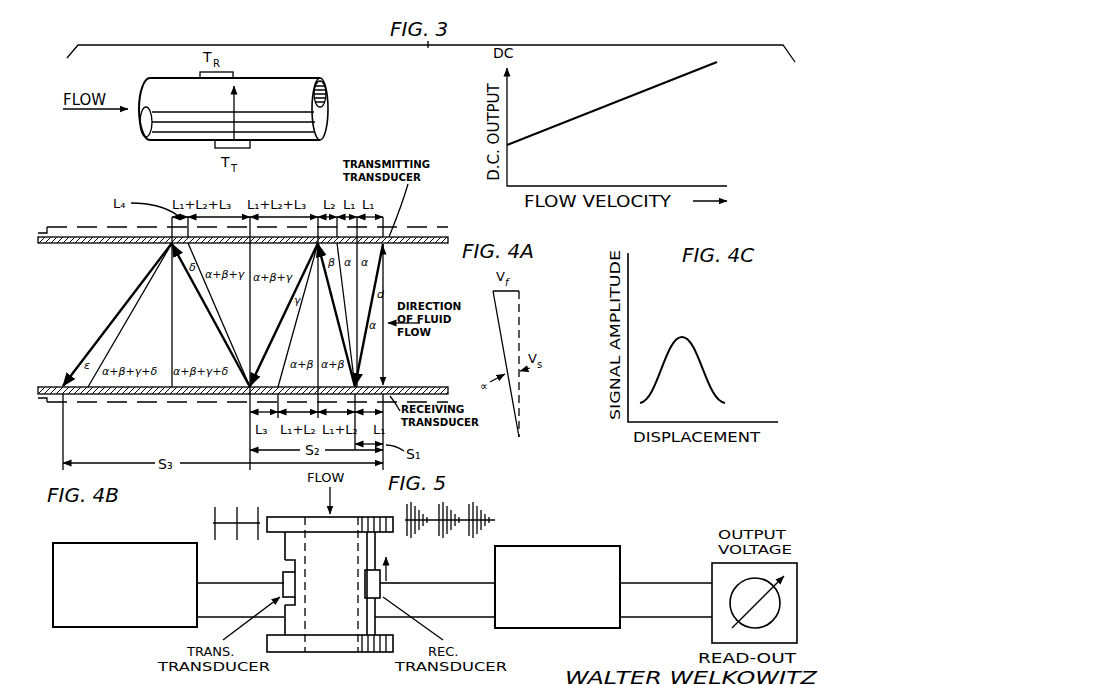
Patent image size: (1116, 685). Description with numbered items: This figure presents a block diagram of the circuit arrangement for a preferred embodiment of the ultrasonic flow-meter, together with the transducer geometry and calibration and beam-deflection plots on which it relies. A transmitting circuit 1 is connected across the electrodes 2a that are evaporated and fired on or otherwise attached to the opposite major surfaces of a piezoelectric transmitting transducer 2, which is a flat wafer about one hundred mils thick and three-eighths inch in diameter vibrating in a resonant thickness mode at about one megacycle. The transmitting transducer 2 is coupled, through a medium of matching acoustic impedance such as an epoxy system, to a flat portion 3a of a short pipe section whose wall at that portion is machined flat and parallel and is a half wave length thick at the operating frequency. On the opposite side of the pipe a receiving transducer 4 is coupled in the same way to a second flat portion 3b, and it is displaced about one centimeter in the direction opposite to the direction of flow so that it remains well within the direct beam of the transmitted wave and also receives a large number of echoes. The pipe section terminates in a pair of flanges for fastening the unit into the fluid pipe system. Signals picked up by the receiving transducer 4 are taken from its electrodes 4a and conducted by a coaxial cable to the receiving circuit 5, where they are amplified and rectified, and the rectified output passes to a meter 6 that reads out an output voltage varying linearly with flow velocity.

The transmitting circuit 1 is at (90, 625).
The transmitting transducer 2 is at (297, 584).
The electrodes 2a is at (283, 575).
The flat portion of pipe section 3a is at (300, 602).
The flat portion of pipe section 3b is at (365, 567).
The receiving transducer 4 is at (381, 585).
The electrodes of receiving transducer 4a is at (381, 588).
The receiving circuit 5 is at (558, 547).
The meter 6 is at (715, 565).